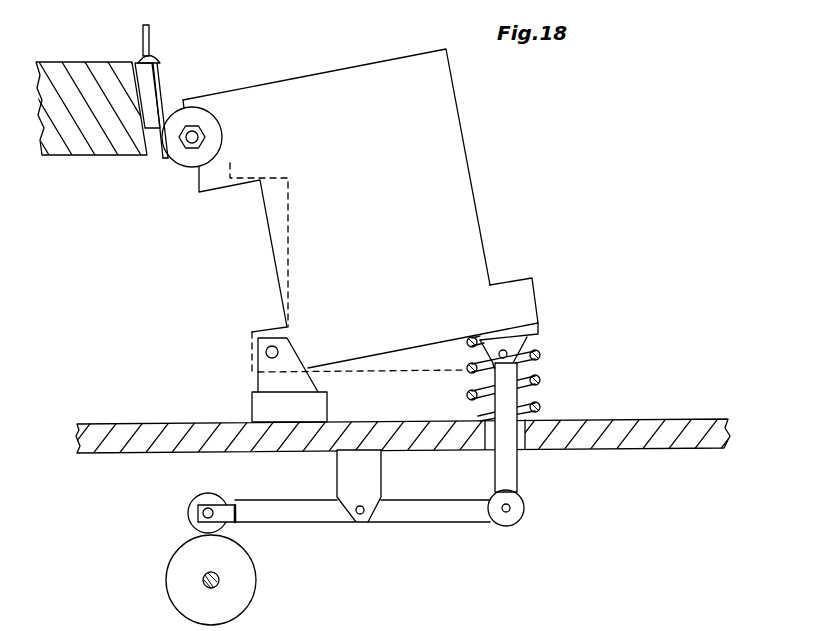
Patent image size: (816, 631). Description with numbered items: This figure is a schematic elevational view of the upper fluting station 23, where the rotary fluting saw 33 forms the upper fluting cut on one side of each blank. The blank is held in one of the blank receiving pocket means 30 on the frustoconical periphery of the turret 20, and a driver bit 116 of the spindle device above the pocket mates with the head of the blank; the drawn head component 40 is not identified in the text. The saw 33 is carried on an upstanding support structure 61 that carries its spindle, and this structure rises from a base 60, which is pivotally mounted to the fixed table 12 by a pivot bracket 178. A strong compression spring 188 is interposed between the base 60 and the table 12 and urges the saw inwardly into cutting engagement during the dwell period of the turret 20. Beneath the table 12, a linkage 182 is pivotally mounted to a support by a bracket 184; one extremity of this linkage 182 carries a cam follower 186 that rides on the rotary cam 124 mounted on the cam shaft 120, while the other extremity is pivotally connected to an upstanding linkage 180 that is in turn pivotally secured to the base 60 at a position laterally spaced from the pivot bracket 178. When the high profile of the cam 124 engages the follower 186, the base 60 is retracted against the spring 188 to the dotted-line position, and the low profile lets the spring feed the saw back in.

The table 12 is at (664, 419).
The turret 20 is at (55, 62).
The upper fluting station 23 is at (484, 134).
The blank receiving pocket means 30 is at (145, 87).
The rotary fluting saw 33 is at (187, 165).
The bolt head 40 is at (160, 57).
The base 60 is at (513, 290).
The support structure 61 is at (397, 75).
The driver bit 116 is at (143, 40).
The cam shaft 120 is at (217, 574).
The rotary cam 124 is at (175, 552).
The pivot bracket 178 is at (252, 405).
The upstanding linkage 180 is at (517, 465).
The linkage 182 is at (417, 522).
The bracket 184 is at (347, 465).
The cam follower 186 is at (188, 507).
The compression spring 188 is at (540, 377).